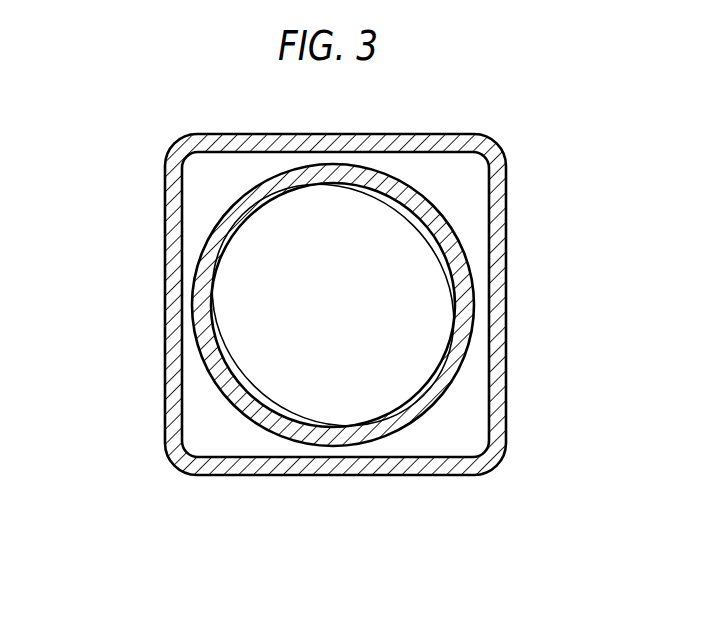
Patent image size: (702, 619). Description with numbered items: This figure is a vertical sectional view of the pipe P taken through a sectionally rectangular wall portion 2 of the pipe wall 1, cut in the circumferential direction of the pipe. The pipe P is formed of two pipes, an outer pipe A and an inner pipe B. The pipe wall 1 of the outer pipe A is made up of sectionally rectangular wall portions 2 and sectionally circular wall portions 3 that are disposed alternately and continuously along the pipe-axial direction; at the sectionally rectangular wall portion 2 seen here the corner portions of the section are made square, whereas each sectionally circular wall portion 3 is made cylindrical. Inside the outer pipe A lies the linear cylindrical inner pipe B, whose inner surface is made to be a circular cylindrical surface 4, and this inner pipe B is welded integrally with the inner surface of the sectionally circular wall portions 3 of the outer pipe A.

The pipe P is at (150, 227).
The pipe wall 1 is at (505, 177).
The sectionally rectangular wall portion 2 is at (493, 225).
The sectionally circular wall portion 3 is at (440, 405).
The circular cylindrical surface 4 is at (438, 390).
The outer pipe A is at (172, 292).
The inner pipe B is at (213, 348).